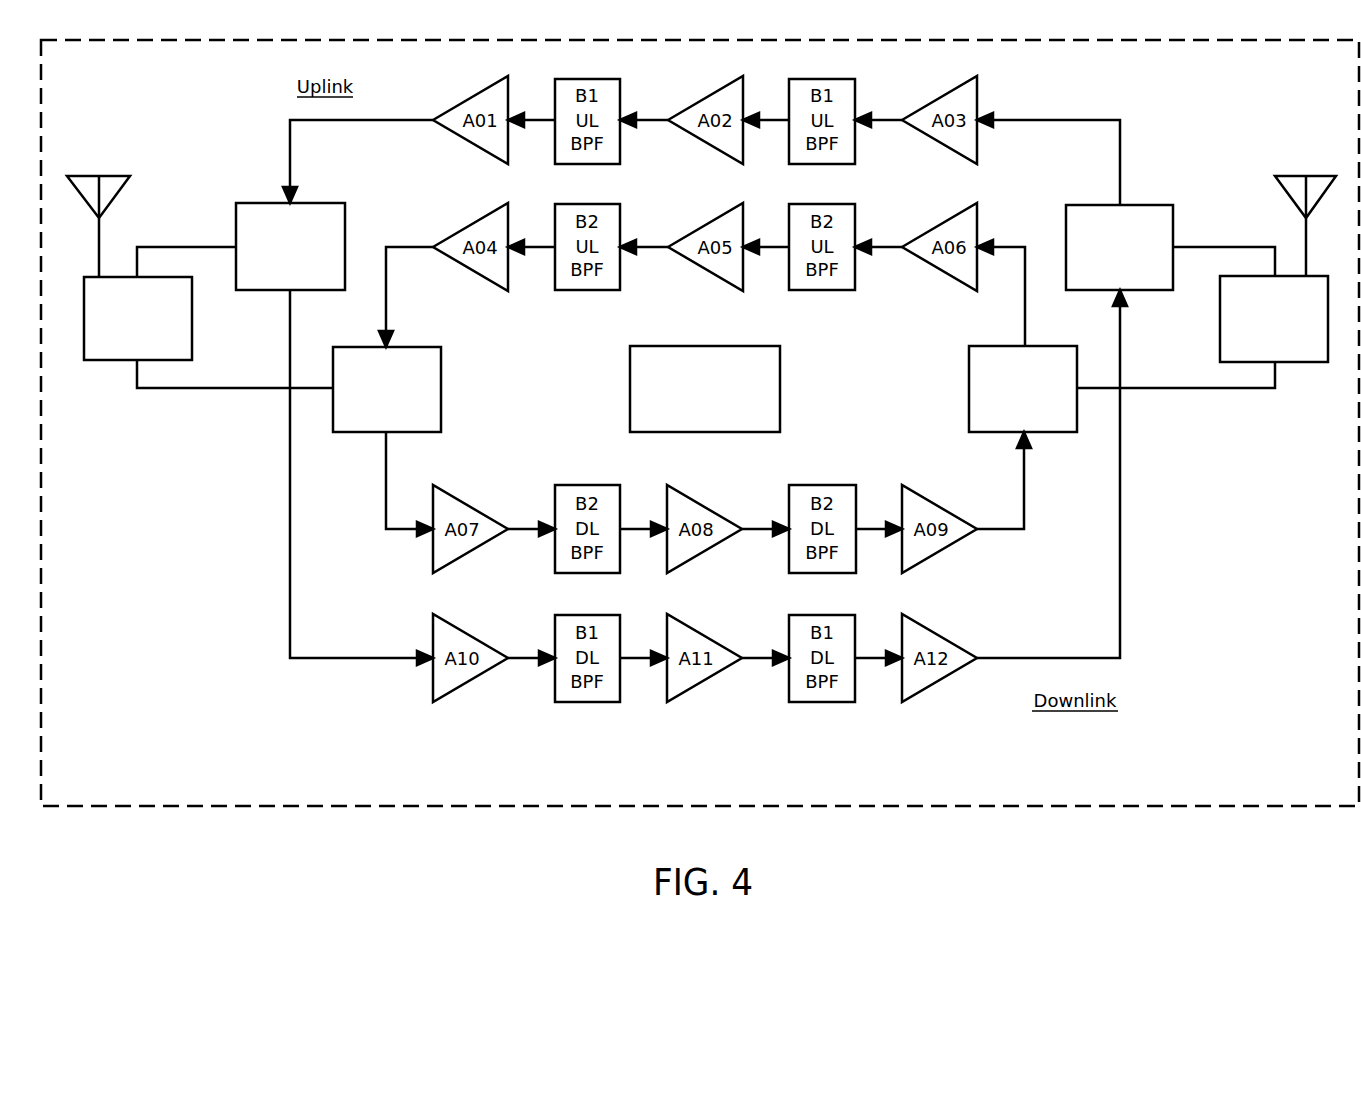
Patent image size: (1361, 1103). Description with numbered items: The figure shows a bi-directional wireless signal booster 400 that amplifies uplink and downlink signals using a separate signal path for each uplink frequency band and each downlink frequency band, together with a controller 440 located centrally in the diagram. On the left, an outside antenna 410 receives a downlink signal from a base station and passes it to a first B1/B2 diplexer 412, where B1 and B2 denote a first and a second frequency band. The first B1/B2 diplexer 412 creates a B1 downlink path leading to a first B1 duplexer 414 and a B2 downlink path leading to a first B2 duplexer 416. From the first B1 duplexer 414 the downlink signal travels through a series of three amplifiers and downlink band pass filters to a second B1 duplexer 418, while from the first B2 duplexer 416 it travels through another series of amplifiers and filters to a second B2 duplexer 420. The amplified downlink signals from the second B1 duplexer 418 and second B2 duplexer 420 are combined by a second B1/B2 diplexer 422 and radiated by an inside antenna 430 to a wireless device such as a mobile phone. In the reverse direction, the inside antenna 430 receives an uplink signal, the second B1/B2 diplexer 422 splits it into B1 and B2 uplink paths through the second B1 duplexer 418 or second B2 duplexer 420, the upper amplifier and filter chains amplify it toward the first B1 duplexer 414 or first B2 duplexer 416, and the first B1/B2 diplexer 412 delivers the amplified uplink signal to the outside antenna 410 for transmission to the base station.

The bi-directional wireless signal booster 400 is at (1306, 788).
The outside antenna 410 is at (98, 184).
The first B1/B2 diplexer 412 is at (121, 356).
The first B1 duplexer 414 is at (273, 282).
The first B2 duplexer 416 is at (370, 425).
The second B1 duplexer 418 is at (1103, 283).
The second B2 duplexer 420 is at (1006, 425).
The second B1/B2 diplexer 422 is at (1257, 355).
The inside antenna 430 is at (1306, 180).
The controller 440 is at (688, 412).